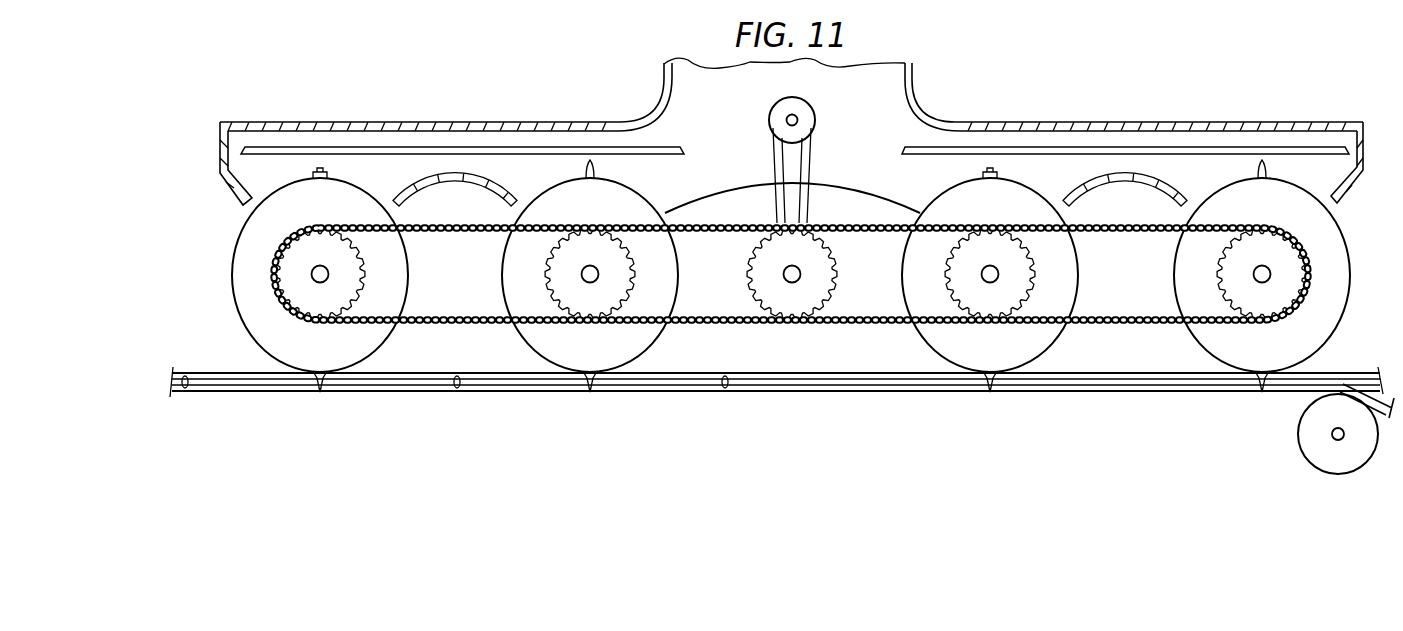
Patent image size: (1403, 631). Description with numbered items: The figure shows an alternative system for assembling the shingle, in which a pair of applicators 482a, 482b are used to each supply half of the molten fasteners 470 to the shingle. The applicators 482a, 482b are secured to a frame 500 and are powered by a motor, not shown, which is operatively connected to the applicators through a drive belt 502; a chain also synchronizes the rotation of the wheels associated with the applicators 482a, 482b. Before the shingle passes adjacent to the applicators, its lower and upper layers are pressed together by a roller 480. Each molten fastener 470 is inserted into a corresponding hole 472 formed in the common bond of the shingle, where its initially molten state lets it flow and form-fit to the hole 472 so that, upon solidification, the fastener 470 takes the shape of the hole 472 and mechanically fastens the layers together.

The frame 500 is at (1222, 122).
The applicator 482a is at (1125, 148).
The applicator 482b is at (460, 147).
The drive belt 502 is at (812, 150).
The molten fastener 470 is at (455, 373).
The hole 472 is at (990, 395).
The roller 480 is at (1298, 442).